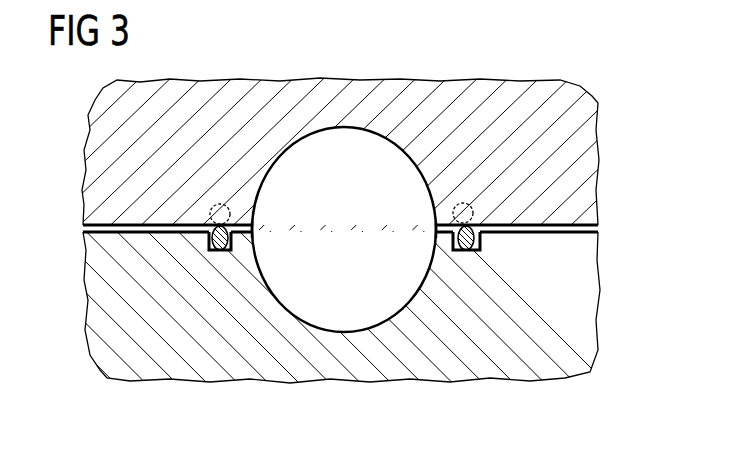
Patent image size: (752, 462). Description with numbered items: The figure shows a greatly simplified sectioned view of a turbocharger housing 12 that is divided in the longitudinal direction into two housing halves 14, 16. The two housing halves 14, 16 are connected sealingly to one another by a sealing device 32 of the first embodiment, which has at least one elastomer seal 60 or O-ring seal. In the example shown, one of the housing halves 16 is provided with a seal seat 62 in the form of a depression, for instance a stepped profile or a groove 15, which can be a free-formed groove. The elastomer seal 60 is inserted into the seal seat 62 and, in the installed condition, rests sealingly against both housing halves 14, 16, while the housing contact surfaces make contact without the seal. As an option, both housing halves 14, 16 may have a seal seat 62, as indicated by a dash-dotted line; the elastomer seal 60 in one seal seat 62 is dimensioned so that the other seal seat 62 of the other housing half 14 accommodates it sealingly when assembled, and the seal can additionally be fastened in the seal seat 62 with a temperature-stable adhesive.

The turbocharger housing 12 is at (93, 150).
The housing half 14 is at (587, 143).
The housing half 16 is at (587, 315).
The sealing device 32 is at (242, 198).
The groove 15 is at (206, 205).
The elastomer seal 60 is at (218, 253).
The seal seat 62 is at (220, 200).